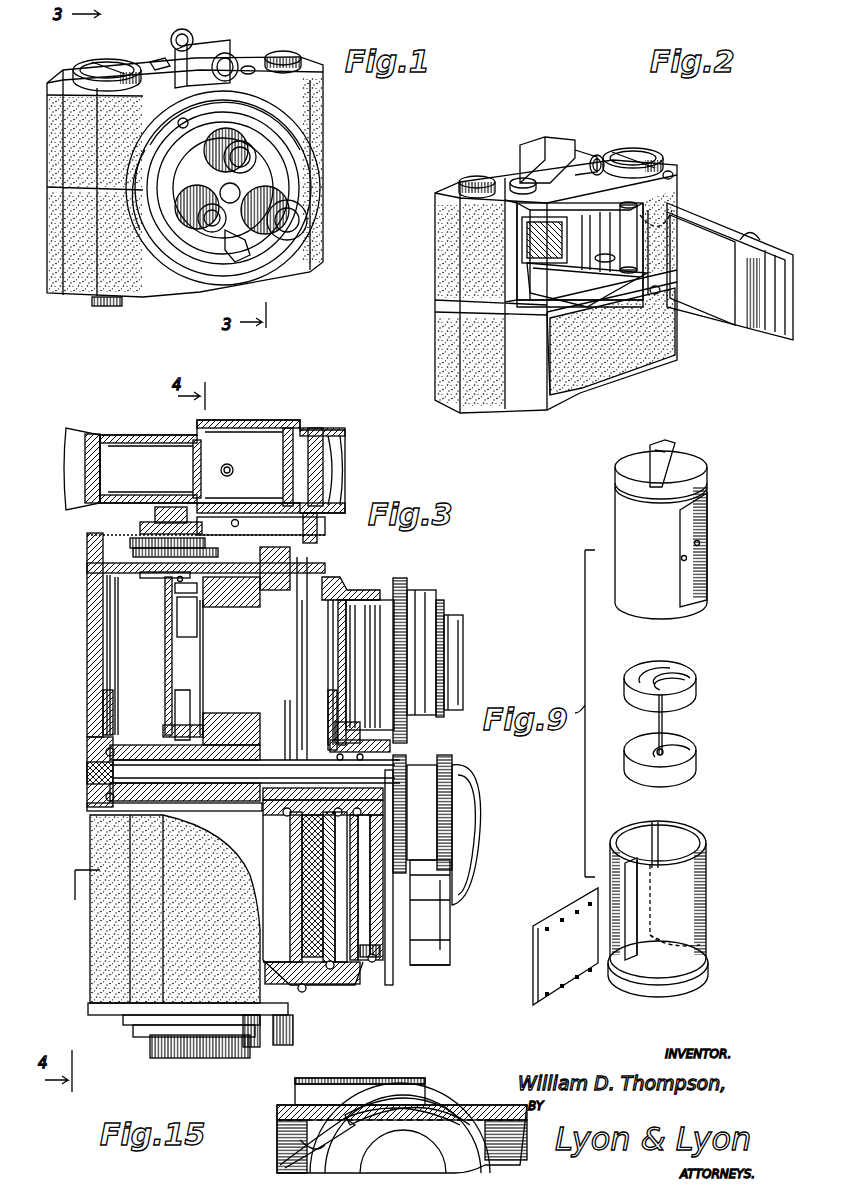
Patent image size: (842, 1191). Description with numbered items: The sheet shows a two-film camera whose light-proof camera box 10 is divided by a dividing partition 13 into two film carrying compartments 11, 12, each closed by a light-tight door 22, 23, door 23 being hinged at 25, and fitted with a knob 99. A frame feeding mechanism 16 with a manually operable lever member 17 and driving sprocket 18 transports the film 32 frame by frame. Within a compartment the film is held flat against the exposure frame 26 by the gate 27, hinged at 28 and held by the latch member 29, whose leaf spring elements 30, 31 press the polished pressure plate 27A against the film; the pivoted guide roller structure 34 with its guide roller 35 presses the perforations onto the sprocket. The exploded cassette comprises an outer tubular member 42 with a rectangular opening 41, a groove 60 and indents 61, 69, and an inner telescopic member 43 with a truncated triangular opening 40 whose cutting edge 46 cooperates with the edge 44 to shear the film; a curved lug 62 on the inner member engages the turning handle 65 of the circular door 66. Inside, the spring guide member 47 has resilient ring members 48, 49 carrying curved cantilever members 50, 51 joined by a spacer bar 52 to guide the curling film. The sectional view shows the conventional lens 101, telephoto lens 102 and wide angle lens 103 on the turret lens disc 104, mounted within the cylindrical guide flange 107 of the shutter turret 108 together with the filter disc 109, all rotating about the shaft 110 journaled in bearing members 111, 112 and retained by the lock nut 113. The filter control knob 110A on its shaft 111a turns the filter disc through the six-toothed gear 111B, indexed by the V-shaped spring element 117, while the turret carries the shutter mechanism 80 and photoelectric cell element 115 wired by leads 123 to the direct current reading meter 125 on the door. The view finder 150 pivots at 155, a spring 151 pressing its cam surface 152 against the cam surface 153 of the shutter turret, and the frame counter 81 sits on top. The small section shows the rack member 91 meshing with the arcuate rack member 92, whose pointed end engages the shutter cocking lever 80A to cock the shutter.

In FIG. 1, the camera box 10 is at (329, 121).
In FIG. 2, the camera box 10 is at (429, 293).
In FIG. 3, the camera box 10 is at (81, 569).
In FIG. 15, the camera box 10 is at (282, 1105).
In FIG. 2, the film carrying compartment 11 is at (505, 242).
In FIG. 3, the film carrying compartment 11 is at (120, 582).
In FIG. 3, the film carrying compartment 12 is at (100, 810).
In FIG. 2, the dividing partition 13 is at (512, 300).
In FIG. 3, the dividing partition 13 is at (218, 738).
In FIG. 3, the frame feeding mechanism 16 is at (119, 548).
In FIG. 1, the manually operable lever member 17 is at (157, 62).
In FIG. 2, the driving sprocket 18 is at (582, 250).
In FIG. 2, the door 22 is at (755, 238).
In FIG. 3, the door 22 is at (98, 705).
In FIG. 2, the door 23 is at (610, 360).
In FIG. 2, the hinge 25 is at (545, 395).
In FIG. 2, the exposure frame 26 is at (520, 232).
In FIG. 3, the exposure frame 26 is at (235, 605).
In FIG. 2, the gate 27 is at (660, 305).
In FIG. 3, the gate 27 is at (167, 658).
In FIG. 2, the pressure plate 27A is at (640, 272).
In FIG. 3, the pressure plate 27A is at (205, 750).
In FIG. 3, the gate hinge 28 is at (165, 732).
In FIG. 3, the latch member 29 is at (165, 578).
In FIG. 3, the leaf spring element 30 is at (182, 585).
In FIG. 3, the leaf spring element 31 is at (183, 700).
In FIG. 3, the film 32 is at (200, 690).
In FIG. 9, the film 32 is at (570, 990).
In FIG. 2, the pivoted guide roller structure 34 is at (640, 250).
In FIG. 2, the guide roller 35 is at (672, 170).
In FIG. 9, the truncated triangular opening 40 is at (700, 545).
In FIG. 9, the rectangular opening 41 is at (625, 878).
In FIG. 9, the outer tubular member 42 is at (680, 874).
In FIG. 9, the inner telescopic member 43 is at (617, 507).
In FIG. 9, the edge 44 is at (640, 893).
In FIG. 9, the cutting edge 46 is at (680, 558).
In FIG. 9, the spring guide member 47 is at (696, 719).
In FIG. 9, the resilient ring member 48 is at (643, 665).
In FIG. 9, the resilient ring member 49 is at (625, 752).
In FIG. 9, the curved resilient cantilever member 50 is at (676, 667).
In FIG. 9, the curved resilient cantilever member 51 is at (685, 748).
In FIG. 9, the spacer bar 52 is at (655, 724).
In FIG. 9, the groove 60 is at (665, 827).
In FIG. 9, the indent 61 is at (660, 930).
In FIG. 9, the curved lug 62 is at (662, 448).
In FIG. 1, the turning handle 65 is at (112, 58).
In FIG. 2, the turning handle 65 is at (633, 152).
In FIG. 1, the circular door 66 is at (90, 66).
In FIG. 2, the circular door 66 is at (655, 152).
In FIG. 9, the indent 69 is at (712, 956).
In FIG. 3, the shutter mechanism 80 is at (290, 618).
In FIG. 15, the shutter mechanism 80 is at (400, 1128).
In FIG. 15, the shutter cocking lever 80A is at (277, 1165).
In FIG. 1, the frame counter 81 is at (250, 62).
In FIG. 2, the frame counter 81 is at (520, 178).
In FIG. 3, the frame counter 81 is at (170, 507).
In FIG. 15, the rack member 91 is at (355, 1080).
In FIG. 15, the arcuate rack member 92 is at (455, 1105).
In FIG. 1, the winding knob 99 is at (292, 50).
In FIG. 2, the winding knob 99 is at (478, 176).
In FIG. 3, the winding knob 99 is at (165, 1055).
In FIG. 1, the conventional lens 101 is at (245, 158).
In FIG. 1, the telephoto lens 102 is at (300, 224).
In FIG. 1, the wide angle lens 103 is at (212, 225).
In FIG. 1, the turret lens disc 104 is at (290, 176).
In FIG. 3, the turret lens disc 104 is at (395, 735).
In FIG. 3, the cylindrical guide flange 107 is at (345, 583).
In FIG. 3, the shutter turret 108 is at (335, 735).
In FIG. 3, the filter disc 109 is at (338, 712).
In FIG. 3, the shaft 110 is at (256, 771).
In FIG. 1, the filter control knob 110A is at (240, 245).
In FIG. 3, the filter control knob 110A is at (435, 970).
In FIG. 3, the bearing member 111 is at (110, 748).
In FIG. 3, the shaft 111a is at (375, 960).
In FIG. 3, the six-toothed gear 111B is at (335, 970).
In FIG. 3, the bearing member 112 is at (368, 763).
In FIG. 3, the lock nut 113 is at (87, 760).
In FIG. 3, the photoelectric cell element 115 is at (285, 840).
In FIG. 3, the V-shaped spring element 117 is at (380, 885).
In FIG. 2, the leads 123 is at (672, 208).
In FIG. 2, the direct current reading meter 125 is at (740, 215).
In FIG. 3, the direct current reading meter 125 is at (150, 640).
In FIG. 1, the view finder 150 is at (232, 40).
In FIG. 2, the view finder 150 is at (548, 137).
In FIG. 3, the view finder 150 is at (312, 418).
In FIG. 3, the spring 151 is at (236, 518).
In FIG. 3, the cam surface 152 is at (305, 520).
In FIG. 3, the cam surface 153 is at (318, 537).
In FIG. 3, the pivot 155 is at (232, 460).